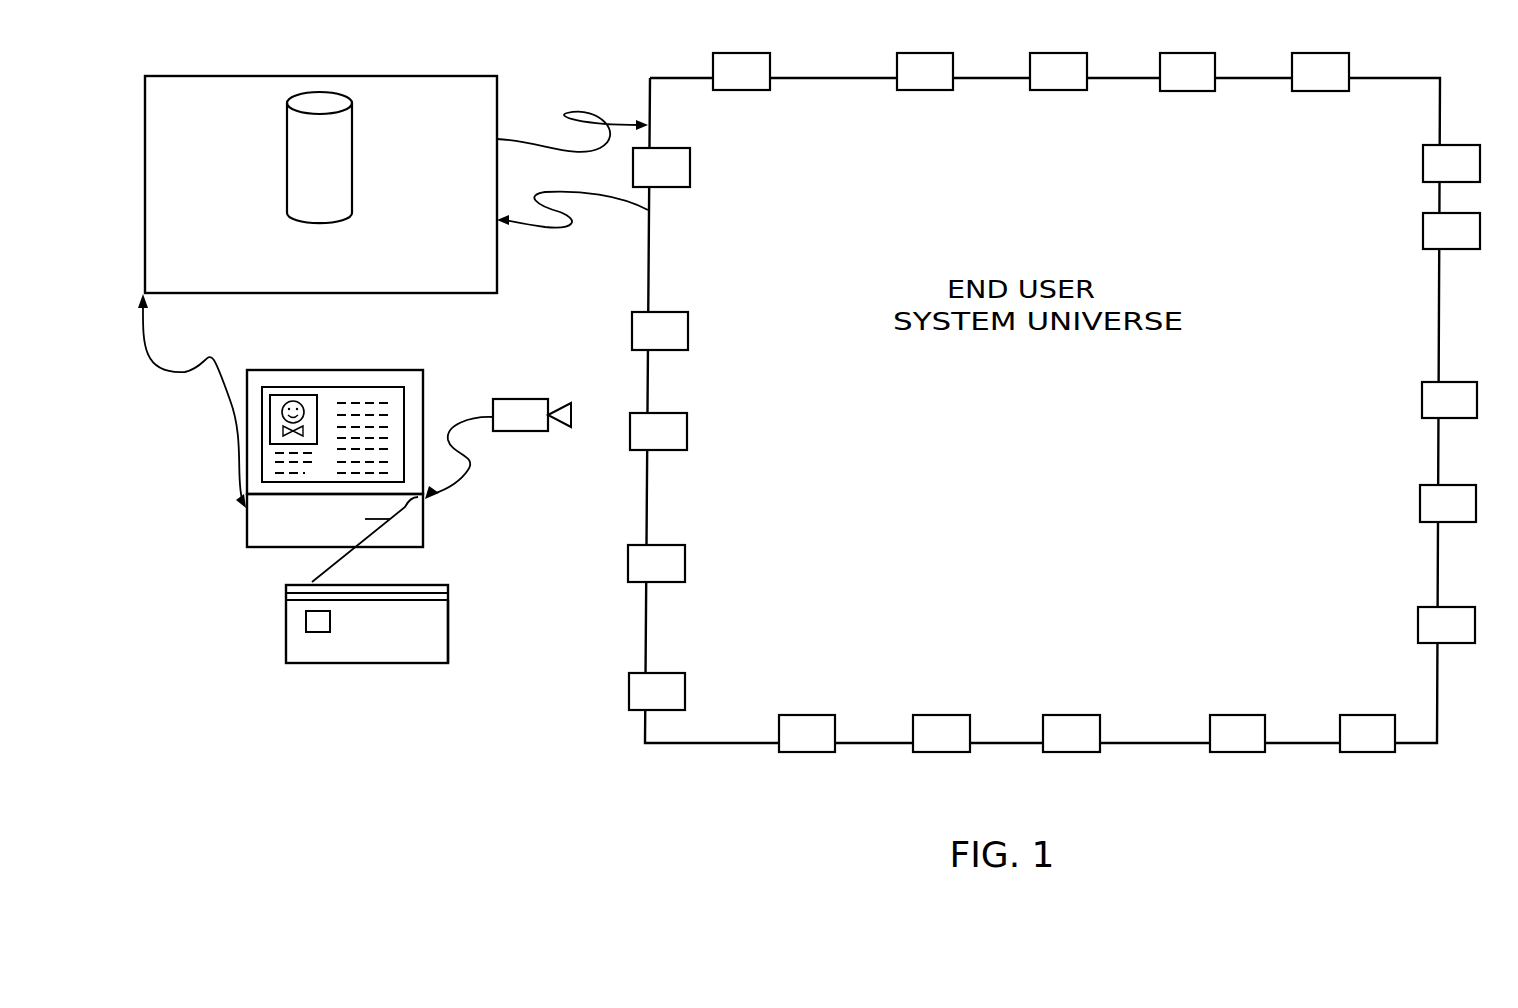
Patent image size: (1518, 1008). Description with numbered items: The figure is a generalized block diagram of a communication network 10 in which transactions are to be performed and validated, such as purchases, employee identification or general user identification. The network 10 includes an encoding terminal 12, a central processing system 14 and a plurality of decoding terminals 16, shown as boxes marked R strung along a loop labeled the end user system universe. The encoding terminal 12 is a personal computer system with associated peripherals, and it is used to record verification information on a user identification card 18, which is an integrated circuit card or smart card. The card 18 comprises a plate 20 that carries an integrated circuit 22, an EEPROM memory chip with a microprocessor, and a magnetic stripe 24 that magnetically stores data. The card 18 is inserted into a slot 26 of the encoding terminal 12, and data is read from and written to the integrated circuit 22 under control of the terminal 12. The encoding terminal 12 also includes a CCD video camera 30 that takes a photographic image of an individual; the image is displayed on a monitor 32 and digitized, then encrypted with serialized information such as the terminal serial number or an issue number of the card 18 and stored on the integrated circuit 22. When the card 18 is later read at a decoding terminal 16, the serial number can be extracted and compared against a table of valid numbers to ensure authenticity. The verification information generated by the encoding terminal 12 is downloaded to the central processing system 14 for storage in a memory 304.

The communication network 10 is at (662, 778).
The encoding terminal 12 is at (447, 372).
The central processing system 14 is at (497, 273).
The decoding terminal 16 is at (632, 440).
The user identification card 18 is at (460, 599).
The plate 20 is at (432, 633).
The integrated circuit 22 is at (317, 632).
The magnetic stripe 24 is at (383, 596).
The slot 26 is at (418, 497).
The CCD video camera 30 is at (522, 399).
The monitor 32 is at (348, 393).
The memory 304 is at (340, 150).